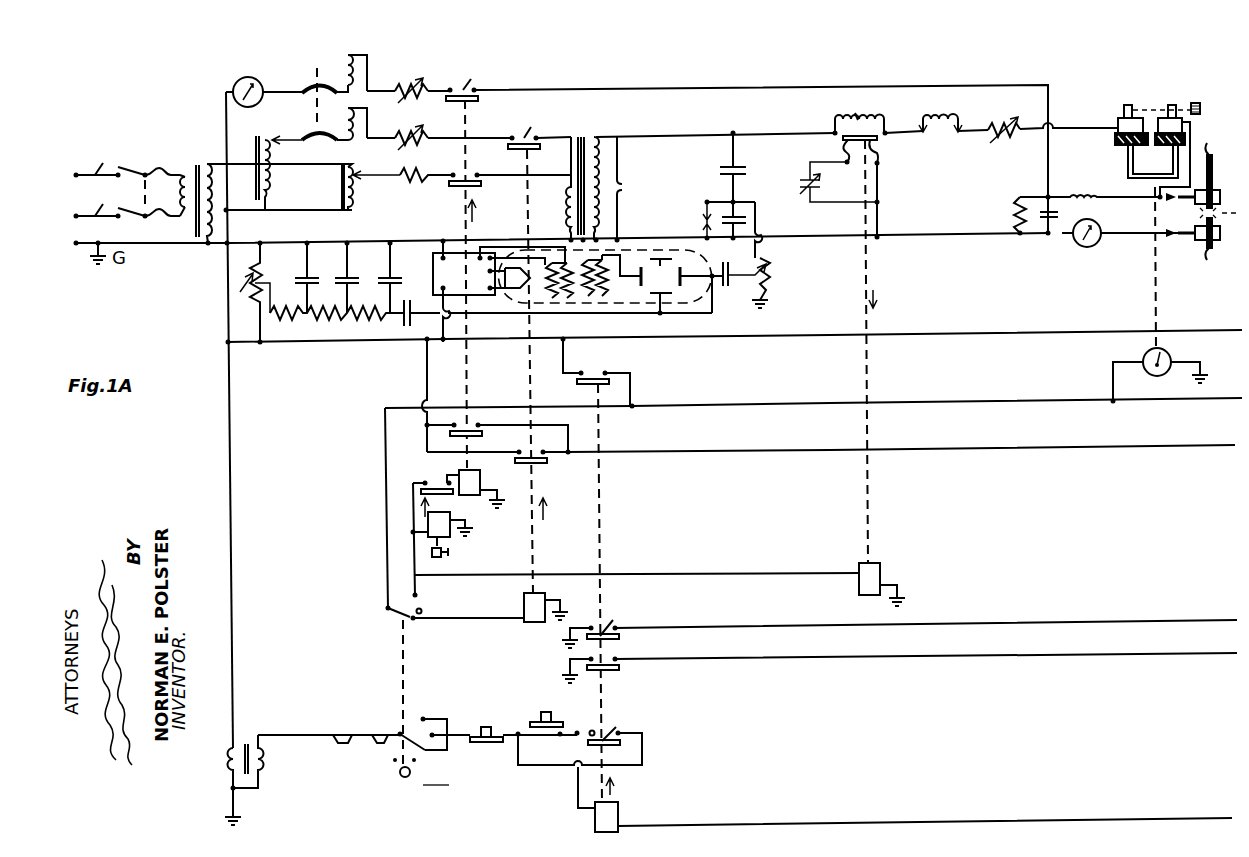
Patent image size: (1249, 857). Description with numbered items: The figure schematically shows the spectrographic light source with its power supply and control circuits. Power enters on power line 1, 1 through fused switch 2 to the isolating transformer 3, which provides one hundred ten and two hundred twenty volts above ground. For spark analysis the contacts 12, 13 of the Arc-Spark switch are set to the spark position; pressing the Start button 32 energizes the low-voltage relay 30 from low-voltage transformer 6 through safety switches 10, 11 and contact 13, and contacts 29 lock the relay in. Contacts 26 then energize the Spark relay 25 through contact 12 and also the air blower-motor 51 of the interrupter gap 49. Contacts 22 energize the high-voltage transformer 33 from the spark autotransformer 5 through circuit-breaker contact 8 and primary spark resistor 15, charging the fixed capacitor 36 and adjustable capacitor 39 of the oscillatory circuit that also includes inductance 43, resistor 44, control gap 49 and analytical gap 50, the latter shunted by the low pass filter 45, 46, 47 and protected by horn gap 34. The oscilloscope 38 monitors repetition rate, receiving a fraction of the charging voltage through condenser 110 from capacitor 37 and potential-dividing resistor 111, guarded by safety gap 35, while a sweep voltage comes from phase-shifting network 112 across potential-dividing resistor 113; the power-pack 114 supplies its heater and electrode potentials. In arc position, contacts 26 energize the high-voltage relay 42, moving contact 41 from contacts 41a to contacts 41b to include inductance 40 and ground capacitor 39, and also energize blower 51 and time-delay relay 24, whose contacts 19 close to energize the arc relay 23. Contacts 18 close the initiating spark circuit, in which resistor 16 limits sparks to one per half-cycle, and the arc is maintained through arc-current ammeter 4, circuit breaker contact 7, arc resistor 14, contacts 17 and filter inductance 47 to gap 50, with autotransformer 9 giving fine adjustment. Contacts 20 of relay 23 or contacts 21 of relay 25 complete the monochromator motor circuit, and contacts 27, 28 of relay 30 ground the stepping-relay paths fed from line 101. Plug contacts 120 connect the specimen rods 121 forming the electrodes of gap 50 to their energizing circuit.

The power line 1 is at (97, 177).
The fused switch 2 is at (128, 170).
The isolating transformer 3 is at (197, 165).
The arc-current ammeter 4 is at (247, 77).
The spark autotransformer 5 is at (272, 174).
The low-voltage transformer 6 is at (245, 745).
The circuit breaker contact 7 is at (305, 87).
The circuit-breaker contact 8 is at (305, 135).
The autotransformer 9 is at (356, 190).
The safety switch 10 is at (341, 732).
The safety switch 11 is at (383, 732).
The contact of Arc-Spark switch 12 is at (383, 619).
The contact of Arc-Spark switch 13 is at (405, 731).
The arc resistor 14 is at (411, 78).
The primary spark resistor 15 is at (406, 127).
The resistor 16 is at (410, 180).
The contacts of relay 23 17 is at (465, 77).
The contacts of relay 23 18 is at (462, 187).
The contacts of time-delay relay 19 is at (440, 488).
The contacts of arc relay 20 is at (480, 432).
The contacts of Spark relay 21 is at (542, 465).
The contacts of Spark relay 22 is at (524, 126).
The arc relay 23 is at (471, 497).
The time-delay relay 24 is at (449, 530).
The Spark relay 25 is at (524, 603).
The contacts of relay 30 26 is at (604, 369).
The contacts of relay 30 27 is at (601, 622).
The contacts of relay 30 28 is at (618, 670).
The contacts of relay 30 29 is at (580, 757).
The low-voltage relay 30 is at (618, 812).
The Start button 32 is at (538, 721).
The high-voltage transformer 33 is at (598, 126).
The horn gap 34 is at (623, 182).
The safety gap 35 is at (703, 215).
The fixed capacitor 36 is at (727, 166).
The capacitor 37 is at (746, 220).
The oscilloscope 38 is at (676, 287).
The adjustable capacitor 39 is at (806, 181).
The inductance 40 is at (832, 113).
The contact of high-voltage relay 41 is at (876, 142).
The contacts 41a is at (856, 113).
The contacts 41b is at (878, 164).
The high-voltage relay 42 is at (875, 573).
The inductance 43 is at (940, 112).
The resistor 44 is at (1002, 117).
The filter element 45 is at (1013, 213).
The filter element 46 is at (1043, 208).
The filter inductance 47 is at (1078, 194).
The interrupter gap 49 is at (1128, 160).
The analytical gap 50 is at (1236, 186).
The air blower-motor 51 is at (1144, 357).
The line 101 is at (1182, 330).
The condenser 110 is at (734, 290).
The potential-dividing resistor 111 is at (773, 290).
The phase-shifting network 112 is at (300, 273).
The potential-dividing resistor 113 is at (240, 292).
The power-pack 114 is at (572, 291).
The plug contacts 120 is at (1173, 230).
The specimen rods 121 is at (1214, 205).